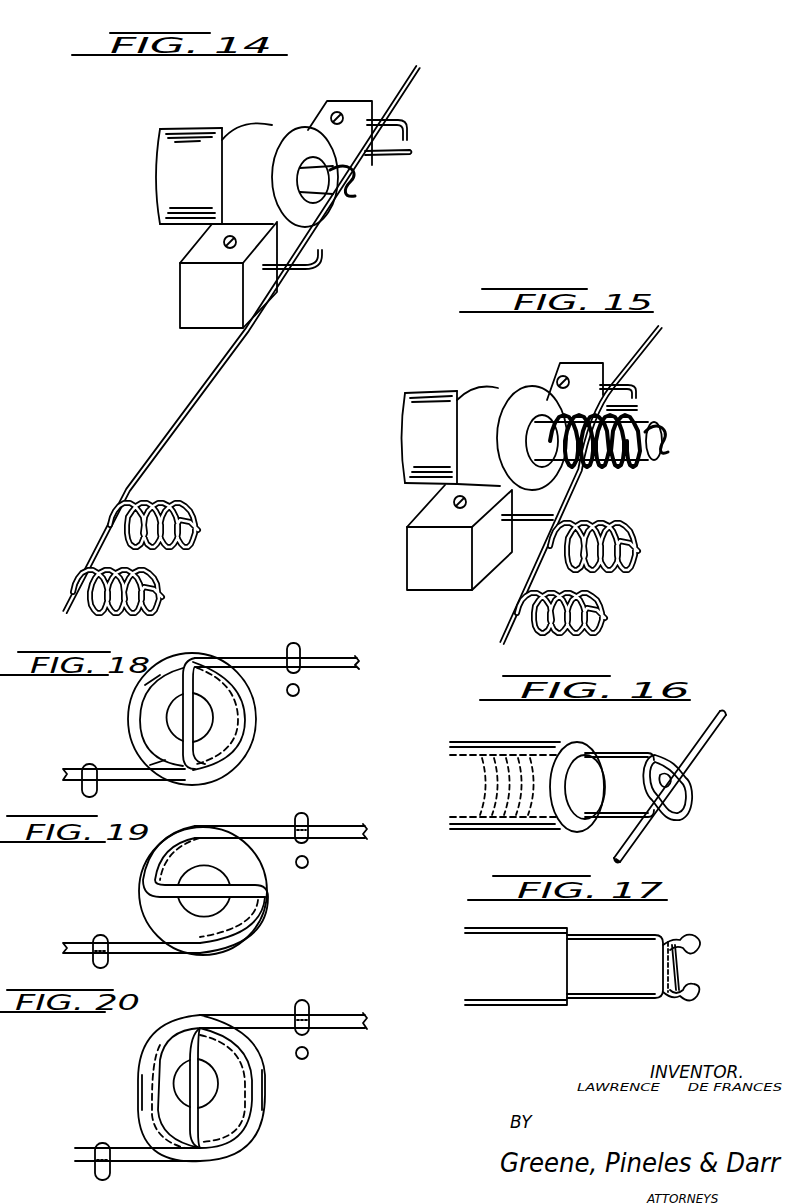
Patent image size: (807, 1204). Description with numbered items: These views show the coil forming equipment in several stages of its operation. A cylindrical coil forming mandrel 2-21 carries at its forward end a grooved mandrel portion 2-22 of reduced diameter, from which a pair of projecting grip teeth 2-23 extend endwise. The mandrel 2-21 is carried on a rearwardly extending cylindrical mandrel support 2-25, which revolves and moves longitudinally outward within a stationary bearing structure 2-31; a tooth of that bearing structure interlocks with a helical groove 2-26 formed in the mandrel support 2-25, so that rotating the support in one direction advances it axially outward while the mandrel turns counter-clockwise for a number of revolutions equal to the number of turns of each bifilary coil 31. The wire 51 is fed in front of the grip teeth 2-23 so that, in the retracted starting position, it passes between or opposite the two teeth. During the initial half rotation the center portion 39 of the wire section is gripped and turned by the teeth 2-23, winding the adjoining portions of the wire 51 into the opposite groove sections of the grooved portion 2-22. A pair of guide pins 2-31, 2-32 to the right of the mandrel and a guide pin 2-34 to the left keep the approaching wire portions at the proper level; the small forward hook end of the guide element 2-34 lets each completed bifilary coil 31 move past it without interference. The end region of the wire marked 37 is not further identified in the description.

In FIG. 14, the wire 51 is at (252, 339).
In FIG. 15, the wire 51 is at (591, 485).
In FIG. 16, the wire 51 is at (678, 787).
In FIG. 18, the wire 51 is at (211, 716).
In FIG. 19, the wire 51 is at (215, 886).
In FIG. 20, the wire 51 is at (221, 1085).
In FIG. 14, the bifilary coil 31 is at (172, 558).
In FIG. 15, the bifilary coil 31 is at (613, 578).
In FIG. 14, the end of rod 37 is at (62, 570).
In FIG. 15, the end of rod 37 is at (515, 585).
In FIG. 18, the center portion of the wire length section 39 is at (227, 717).
In FIG. 19, the center portion of the wire length section 39 is at (231, 881).
In FIG. 20, the center portion of the wire length section 39 is at (237, 1083).
In FIG. 14, the cylindrical coil forming mandrel 2-21 is at (345, 201).
In FIG. 15, the cylindrical coil forming mandrel 2-21 is at (598, 460).
In FIG. 16, the cylindrical coil forming mandrel 2-21 is at (620, 771).
In FIG. 17, the cylindrical coil forming mandrel 2-21 is at (615, 954).
In FIG. 18, the cylindrical coil forming mandrel 2-21 is at (219, 719).
In FIG. 19, the cylindrical coil forming mandrel 2-21 is at (225, 890).
In FIG. 20, the cylindrical coil forming mandrel 2-21 is at (231, 1088).
In FIG. 15, the grooved mandrel portion 2-22 is at (630, 443).
In FIG. 16, the grooved mandrel portion 2-22 is at (632, 794).
In FIG. 17, the grooved mandrel portion 2-22 is at (690, 983).
In FIG. 15, the grip teeth 2-23 is at (681, 435).
In FIG. 16, the grip teeth 2-23 is at (668, 787).
In FIG. 17, the grip teeth 2-23 is at (706, 968).
In FIG. 14, the cylindrical mandrel support 2-25 is at (264, 213).
In FIG. 15, the cylindrical mandrel support 2-25 is at (503, 468).
In FIG. 16, the cylindrical mandrel support 2-25 is at (527, 773).
In FIG. 17, the cylindrical mandrel support 2-25 is at (516, 954).
In FIG. 16, the helical groove 2-26 is at (507, 764).
In FIG. 14, the guide pin 2-31 is at (409, 121).
In FIG. 15, the guide pin 2-31 is at (645, 384).
In FIG. 18, the guide pin 2-31 is at (318, 652).
In FIG. 19, the guide pin 2-31 is at (324, 822).
In FIG. 20, the guide pin 2-31 is at (326, 1011).
In FIG. 14, the guide pin 2-32 is at (399, 168).
In FIG. 15, the guide pin 2-32 is at (648, 399).
In FIG. 18, the guide pin 2-32 is at (314, 690).
In FIG. 19, the guide pin 2-32 is at (324, 862).
In FIG. 20, the guide pin 2-32 is at (327, 1053).
In FIG. 14, the guide pin 2-34 is at (308, 275).
In FIG. 15, the guide pin 2-34 is at (529, 533).
In FIG. 18, the guide pin 2-34 is at (68, 784).
In FIG. 19, the guide pin 2-34 is at (73, 953).
In FIG. 20, the guide pin 2-34 is at (74, 1164).